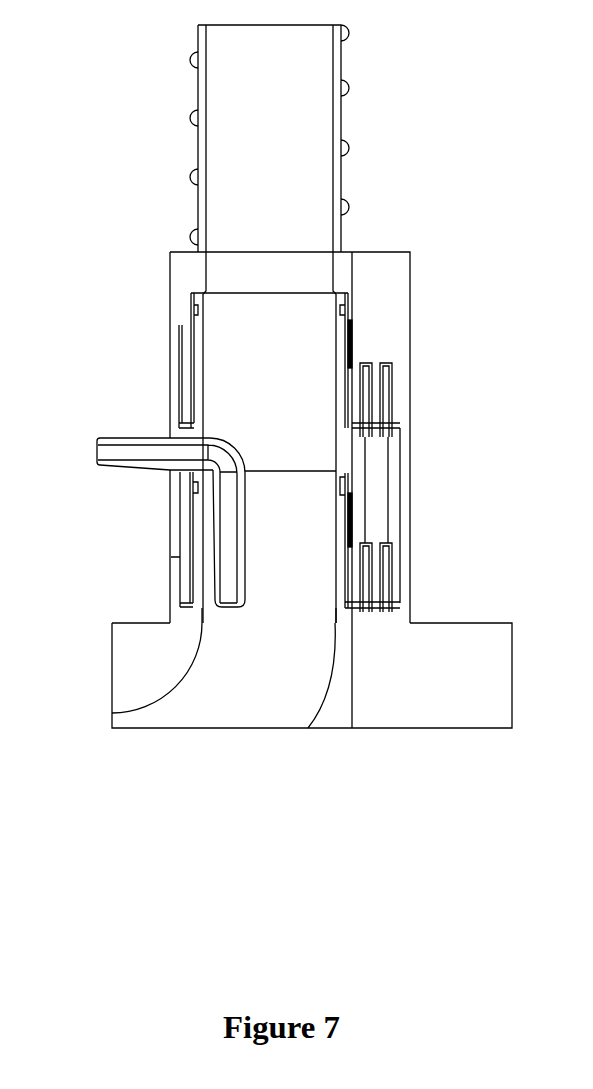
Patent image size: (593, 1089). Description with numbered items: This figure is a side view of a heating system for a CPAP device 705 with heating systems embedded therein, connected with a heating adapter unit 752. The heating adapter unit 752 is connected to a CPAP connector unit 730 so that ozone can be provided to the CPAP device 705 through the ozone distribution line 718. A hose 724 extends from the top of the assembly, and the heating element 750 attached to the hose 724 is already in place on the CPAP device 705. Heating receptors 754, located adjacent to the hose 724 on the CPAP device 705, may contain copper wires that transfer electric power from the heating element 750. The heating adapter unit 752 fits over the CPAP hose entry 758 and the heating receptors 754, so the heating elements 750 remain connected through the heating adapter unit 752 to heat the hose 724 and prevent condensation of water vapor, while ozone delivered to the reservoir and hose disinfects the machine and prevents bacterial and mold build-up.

The hose 724 is at (300, 167).
The CPAP connector unit 730 is at (292, 346).
The heating element 750 is at (393, 395).
The heating adapter unit 752 is at (375, 493).
The heating receptors 754 is at (388, 600).
The ozone distribution line 718 is at (135, 453).
The CPAP hose entry 758 is at (265, 573).
The CPAP device 705 is at (440, 693).